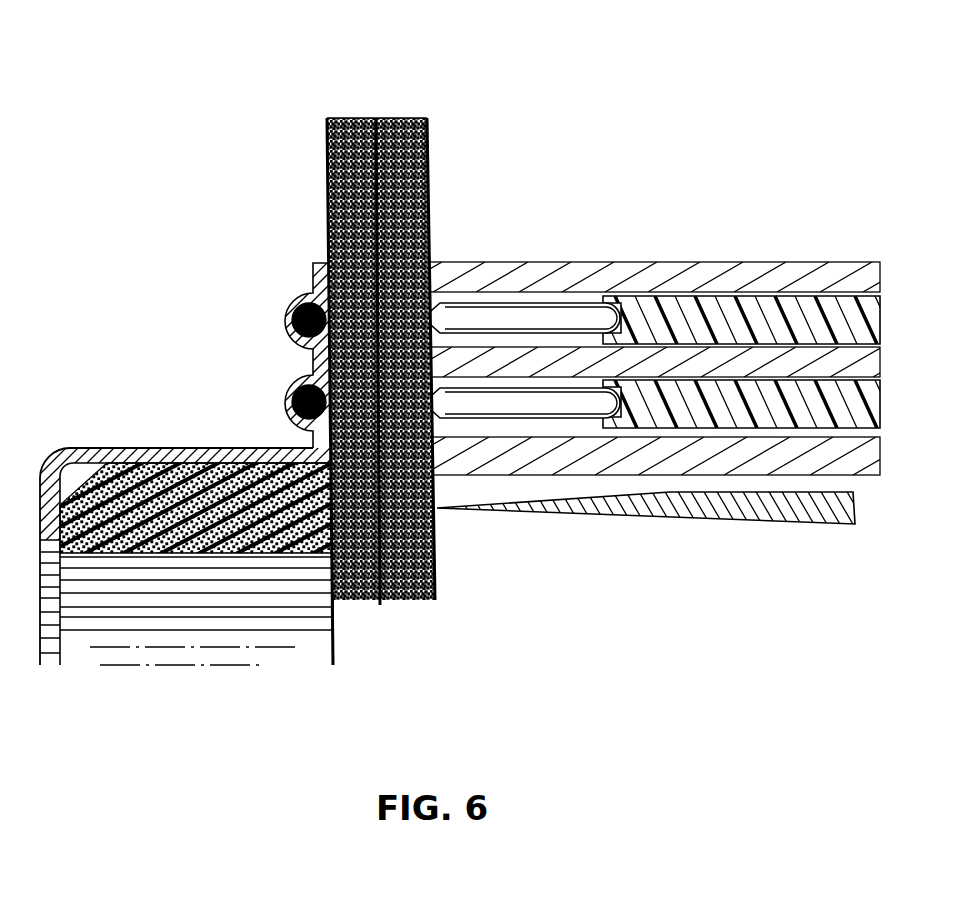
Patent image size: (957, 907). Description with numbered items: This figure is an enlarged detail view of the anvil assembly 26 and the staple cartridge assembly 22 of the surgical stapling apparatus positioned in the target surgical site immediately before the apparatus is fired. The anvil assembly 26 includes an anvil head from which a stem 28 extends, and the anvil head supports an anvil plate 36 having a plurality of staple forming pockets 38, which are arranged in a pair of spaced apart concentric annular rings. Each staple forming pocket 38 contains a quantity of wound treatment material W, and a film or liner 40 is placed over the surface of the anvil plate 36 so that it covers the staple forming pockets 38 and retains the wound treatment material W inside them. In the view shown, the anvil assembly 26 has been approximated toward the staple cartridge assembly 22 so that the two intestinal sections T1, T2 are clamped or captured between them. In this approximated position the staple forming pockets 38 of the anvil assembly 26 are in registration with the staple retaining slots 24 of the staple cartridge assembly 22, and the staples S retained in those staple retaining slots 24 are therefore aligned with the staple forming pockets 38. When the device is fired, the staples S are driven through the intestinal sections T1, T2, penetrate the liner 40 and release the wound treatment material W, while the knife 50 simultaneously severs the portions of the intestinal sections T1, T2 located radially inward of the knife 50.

The staple cartridge assembly 22 is at (712, 258).
The staple retaining slots 24 is at (600, 297).
The anvil assembly 26 is at (112, 425).
The stem 28 is at (87, 657).
The anvil plate 36 is at (326, 262).
The staple forming pockets 38 is at (282, 301).
The liner 40 is at (308, 278).
The knife 50 is at (732, 527).
The staples S is at (505, 392).
The wound treatment material W is at (303, 293).
The intestinal section T1 is at (348, 128).
The intestinal section T2 is at (403, 127).